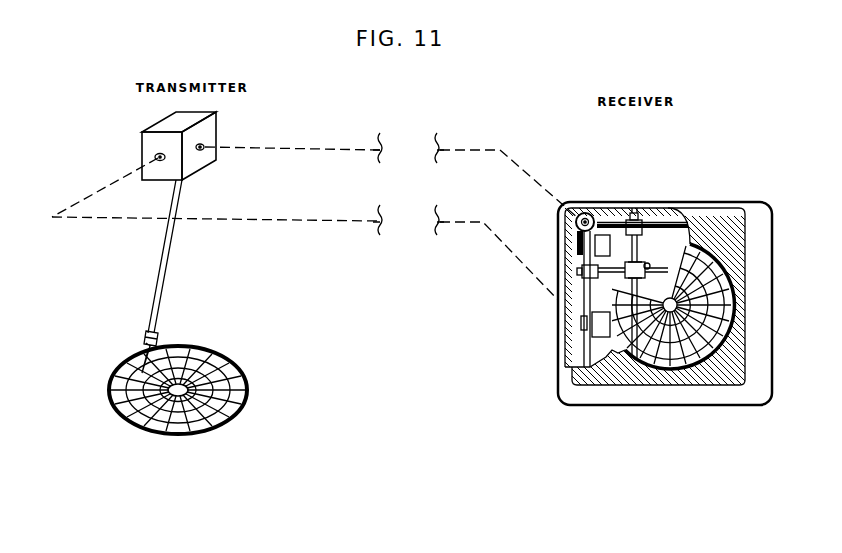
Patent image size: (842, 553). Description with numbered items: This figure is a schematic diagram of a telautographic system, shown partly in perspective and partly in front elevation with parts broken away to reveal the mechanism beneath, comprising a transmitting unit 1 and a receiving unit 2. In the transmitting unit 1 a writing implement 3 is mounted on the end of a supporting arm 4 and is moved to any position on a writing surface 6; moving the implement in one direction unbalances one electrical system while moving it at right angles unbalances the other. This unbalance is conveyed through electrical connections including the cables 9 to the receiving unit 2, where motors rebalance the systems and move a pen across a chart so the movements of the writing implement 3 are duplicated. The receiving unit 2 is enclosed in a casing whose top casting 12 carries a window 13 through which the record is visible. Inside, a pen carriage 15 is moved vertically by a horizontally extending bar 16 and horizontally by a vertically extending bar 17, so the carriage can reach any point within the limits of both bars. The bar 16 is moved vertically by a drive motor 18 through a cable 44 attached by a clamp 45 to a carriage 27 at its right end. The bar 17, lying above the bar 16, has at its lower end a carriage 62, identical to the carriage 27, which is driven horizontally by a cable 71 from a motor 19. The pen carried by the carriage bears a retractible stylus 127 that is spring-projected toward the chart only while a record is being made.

The transmitting unit 1 is at (112, 119).
The receiving unit 2 is at (694, 180).
The writing implement 3 is at (158, 339).
The supporting arm 4 is at (159, 271).
The writing surface 6 is at (140, 426).
The cables 9 is at (255, 220).
The top casting 12 is at (760, 323).
The window 13 is at (672, 376).
The pen carriage 15 is at (707, 208).
The horizontally extending bar 16 is at (616, 268).
The vertically extending bar 17 is at (631, 296).
The drive motor 18 is at (600, 330).
The motor 19 is at (600, 236).
The carriage 27 is at (636, 230).
The cable 44 is at (659, 222).
The clamp 45 is at (633, 213).
The carriage 62 is at (580, 270).
The cable 71 is at (583, 298).
The retractible stylus 127 is at (640, 279).